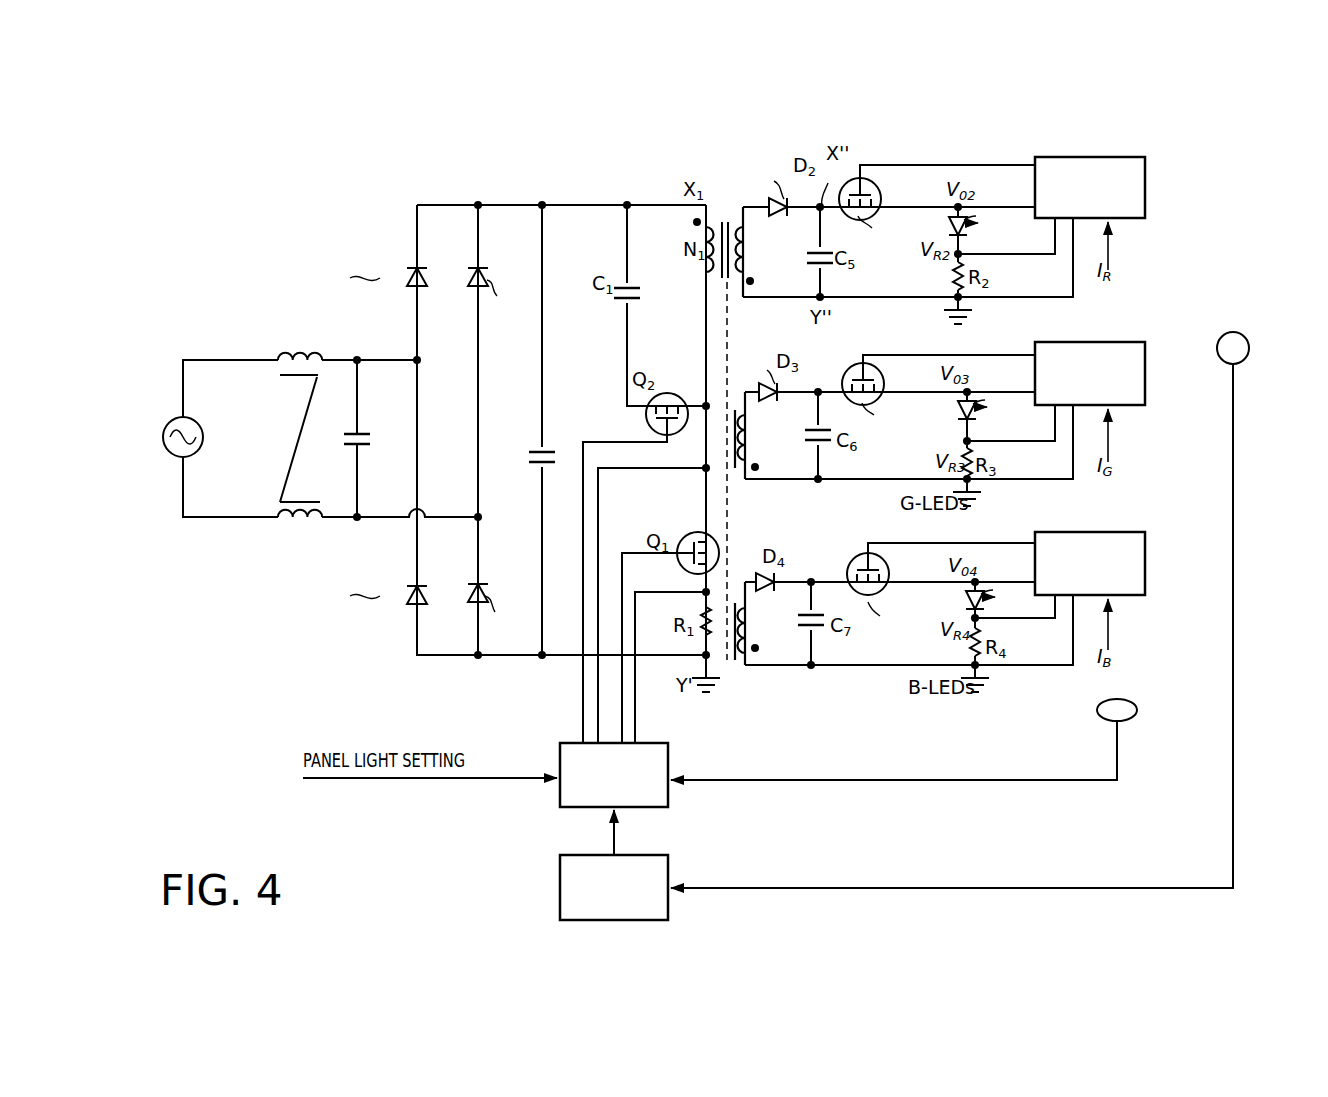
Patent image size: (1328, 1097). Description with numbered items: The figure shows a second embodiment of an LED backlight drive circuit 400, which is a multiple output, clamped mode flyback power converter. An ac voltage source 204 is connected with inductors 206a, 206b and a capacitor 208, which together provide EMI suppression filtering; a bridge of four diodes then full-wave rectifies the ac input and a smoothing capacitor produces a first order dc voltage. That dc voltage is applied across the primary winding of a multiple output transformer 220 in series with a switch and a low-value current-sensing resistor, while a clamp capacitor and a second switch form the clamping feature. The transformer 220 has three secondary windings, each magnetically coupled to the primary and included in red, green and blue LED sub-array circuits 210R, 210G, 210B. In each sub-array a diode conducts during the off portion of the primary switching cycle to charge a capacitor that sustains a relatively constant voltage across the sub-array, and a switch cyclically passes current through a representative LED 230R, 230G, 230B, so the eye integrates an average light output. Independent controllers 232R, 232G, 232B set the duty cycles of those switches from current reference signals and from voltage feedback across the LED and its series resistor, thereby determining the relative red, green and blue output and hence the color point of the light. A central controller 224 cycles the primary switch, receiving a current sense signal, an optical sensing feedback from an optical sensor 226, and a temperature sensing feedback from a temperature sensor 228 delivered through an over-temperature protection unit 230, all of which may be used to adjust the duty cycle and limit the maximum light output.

The power supply circuit 400 is at (258, 277).
The ac voltage source 204 is at (162, 437).
The inductor 206a is at (304, 360).
The inductor 206b is at (298, 522).
The capacitor 208 is at (357, 429).
The multiple output transformer 220 is at (728, 216).
The red LED sub-array 210R is at (959, 143).
The green LED sub-array 210G is at (914, 352).
The blue LED sub-array 210B is at (866, 545).
The red LED 230R is at (971, 232).
The green LED 230G is at (959, 420).
The blue LED 230B is at (966, 606).
The controller R 232R is at (1145, 200).
The controller G 232G is at (1145, 404).
The controller B 232B is at (1145, 589).
The temperature sensor 228 is at (1249, 348).
The optical sensor 226 is at (1137, 710).
The central controller 224 is at (643, 808).
The over-temperature protection unit 230 is at (580, 854).